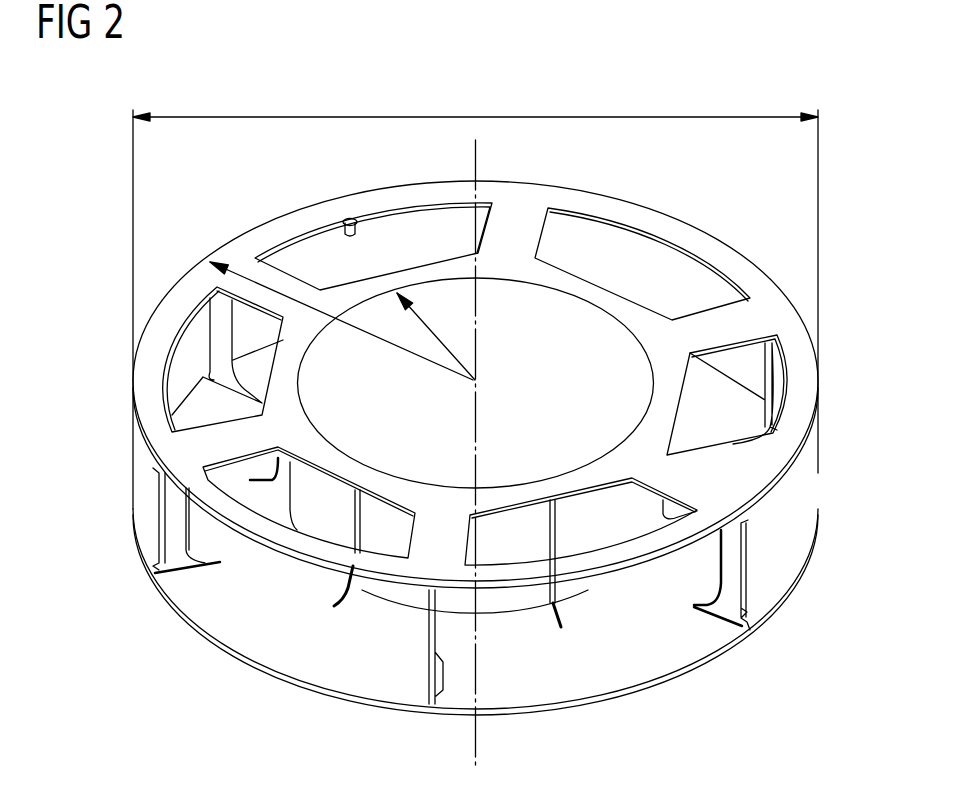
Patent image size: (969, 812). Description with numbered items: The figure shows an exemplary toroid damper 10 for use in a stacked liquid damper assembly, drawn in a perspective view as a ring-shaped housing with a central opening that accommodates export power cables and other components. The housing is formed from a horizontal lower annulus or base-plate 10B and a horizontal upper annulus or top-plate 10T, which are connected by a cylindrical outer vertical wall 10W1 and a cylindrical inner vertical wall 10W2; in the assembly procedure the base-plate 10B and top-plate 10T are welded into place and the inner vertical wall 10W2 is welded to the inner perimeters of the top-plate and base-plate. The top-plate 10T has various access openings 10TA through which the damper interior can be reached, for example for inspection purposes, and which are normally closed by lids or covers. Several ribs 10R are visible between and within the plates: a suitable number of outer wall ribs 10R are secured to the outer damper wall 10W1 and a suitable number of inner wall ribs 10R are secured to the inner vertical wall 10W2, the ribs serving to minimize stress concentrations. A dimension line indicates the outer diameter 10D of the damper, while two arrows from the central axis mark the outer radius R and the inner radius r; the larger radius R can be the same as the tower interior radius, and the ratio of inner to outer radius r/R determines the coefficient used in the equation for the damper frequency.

The toroid damper housing 10 is at (462, 384).
The damper outer diameter 10D is at (478, 113).
The top-plate 10T is at (462, 370).
The access opening 10TA is at (722, 447).
The base-plate 10B is at (717, 640).
The rib 10R is at (172, 537).
The outer vertical wall 10W1 is at (133, 431).
The inner vertical wall 10W2 is at (541, 372).
The outer radius R is at (368, 340).
The inner radius r is at (430, 330).